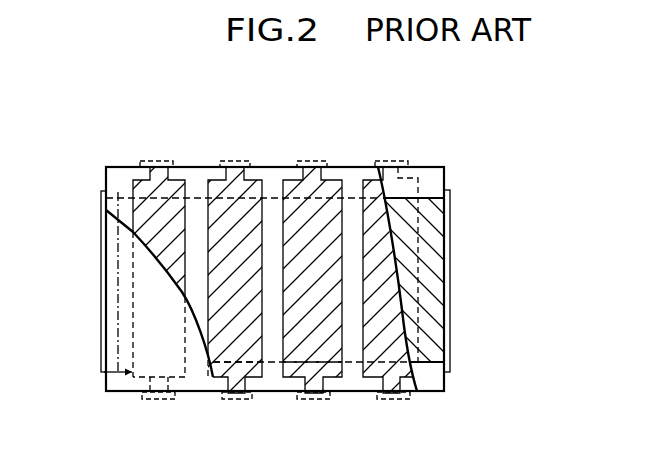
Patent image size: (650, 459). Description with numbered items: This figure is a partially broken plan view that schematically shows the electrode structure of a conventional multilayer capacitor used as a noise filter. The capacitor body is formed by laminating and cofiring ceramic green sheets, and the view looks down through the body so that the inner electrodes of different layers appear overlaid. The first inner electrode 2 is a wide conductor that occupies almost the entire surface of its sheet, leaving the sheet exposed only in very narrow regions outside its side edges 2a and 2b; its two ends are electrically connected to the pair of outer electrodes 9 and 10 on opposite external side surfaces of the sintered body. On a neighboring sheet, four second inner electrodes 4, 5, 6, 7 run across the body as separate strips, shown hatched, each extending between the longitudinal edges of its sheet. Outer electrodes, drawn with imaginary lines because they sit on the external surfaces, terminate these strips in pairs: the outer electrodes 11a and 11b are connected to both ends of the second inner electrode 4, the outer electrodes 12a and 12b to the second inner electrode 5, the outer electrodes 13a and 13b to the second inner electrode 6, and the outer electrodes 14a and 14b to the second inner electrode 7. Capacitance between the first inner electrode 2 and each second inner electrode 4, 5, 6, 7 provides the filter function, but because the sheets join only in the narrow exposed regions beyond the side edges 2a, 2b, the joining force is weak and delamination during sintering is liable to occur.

The first inner electrode 2 is at (434, 233).
The side edge of the first inner electrode 2a is at (434, 365).
The side edge of the first inner electrode 2b is at (433, 189).
The second inner electrode 4 is at (106, 377).
The second inner electrode 5 is at (263, 362).
The second inner electrode 6 is at (340, 356).
The second inner electrode 7 is at (365, 218).
The outer electrode 9 is at (103, 313).
The outer electrode 10 is at (450, 300).
The outer electrode 11a is at (167, 160).
The outer electrode 11b is at (160, 400).
The outer electrode 12a is at (243, 160).
The outer electrode 12b is at (235, 400).
The outer electrode 13a is at (321, 160).
The outer electrode 13b is at (320, 400).
The outer electrode 14a is at (400, 160).
The outer electrode 14b is at (397, 400).